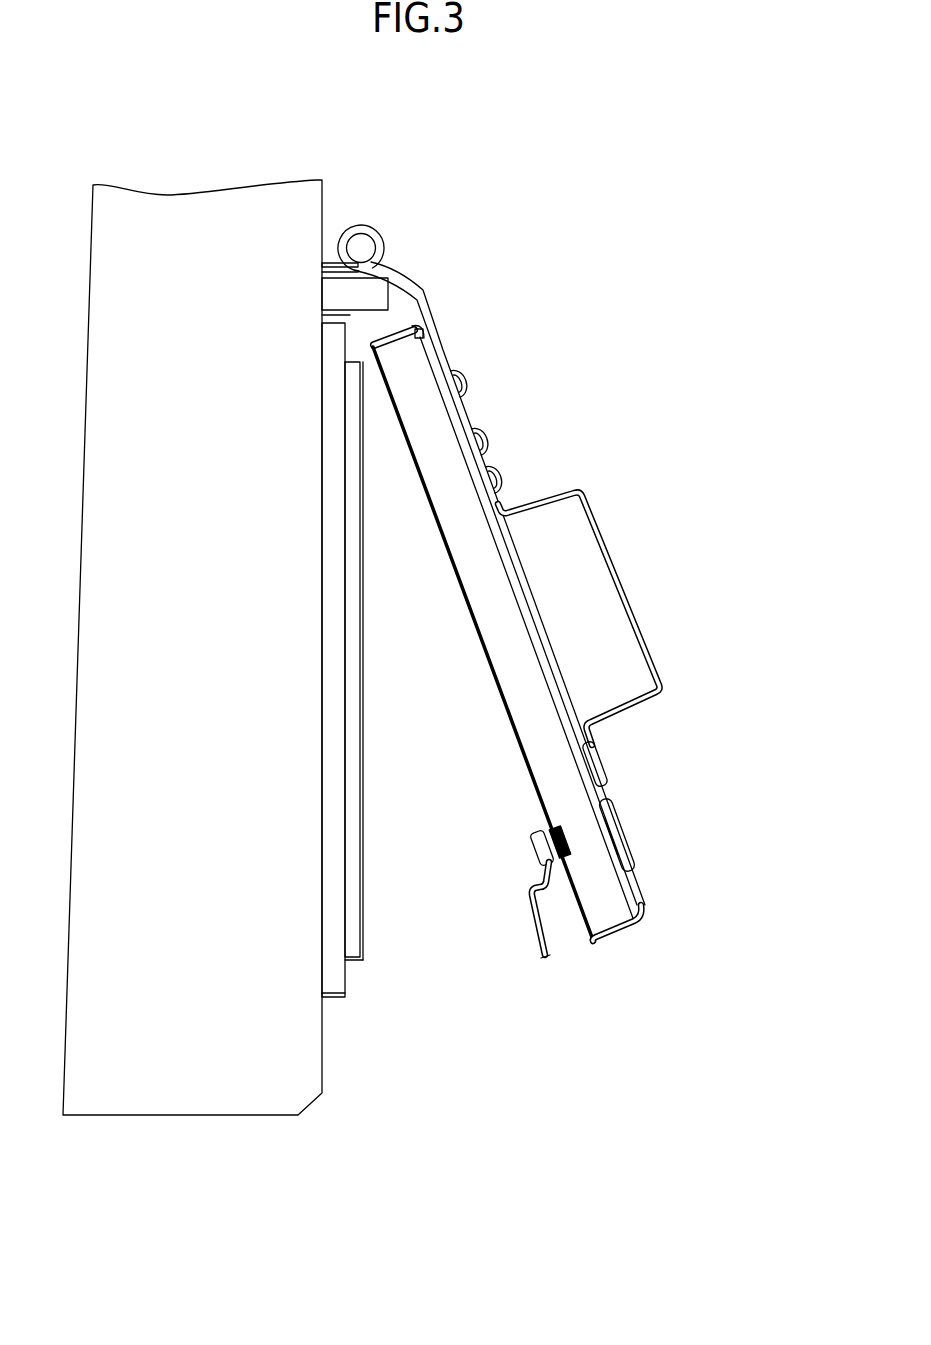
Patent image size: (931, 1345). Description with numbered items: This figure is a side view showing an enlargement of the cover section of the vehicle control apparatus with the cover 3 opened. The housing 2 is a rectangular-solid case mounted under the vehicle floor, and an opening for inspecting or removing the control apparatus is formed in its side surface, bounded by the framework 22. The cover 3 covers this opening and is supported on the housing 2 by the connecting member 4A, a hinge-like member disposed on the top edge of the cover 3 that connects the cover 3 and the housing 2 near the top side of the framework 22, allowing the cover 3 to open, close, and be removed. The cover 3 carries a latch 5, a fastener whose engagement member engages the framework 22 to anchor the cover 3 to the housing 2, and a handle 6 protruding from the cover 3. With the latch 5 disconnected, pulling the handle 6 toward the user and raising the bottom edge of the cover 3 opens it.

The housing 2 is at (245, 1082).
The framework 22 is at (337, 977).
The cover 3 is at (607, 920).
The connecting member 4A is at (340, 228).
The latch 5 is at (628, 832).
The handle 6 is at (656, 664).